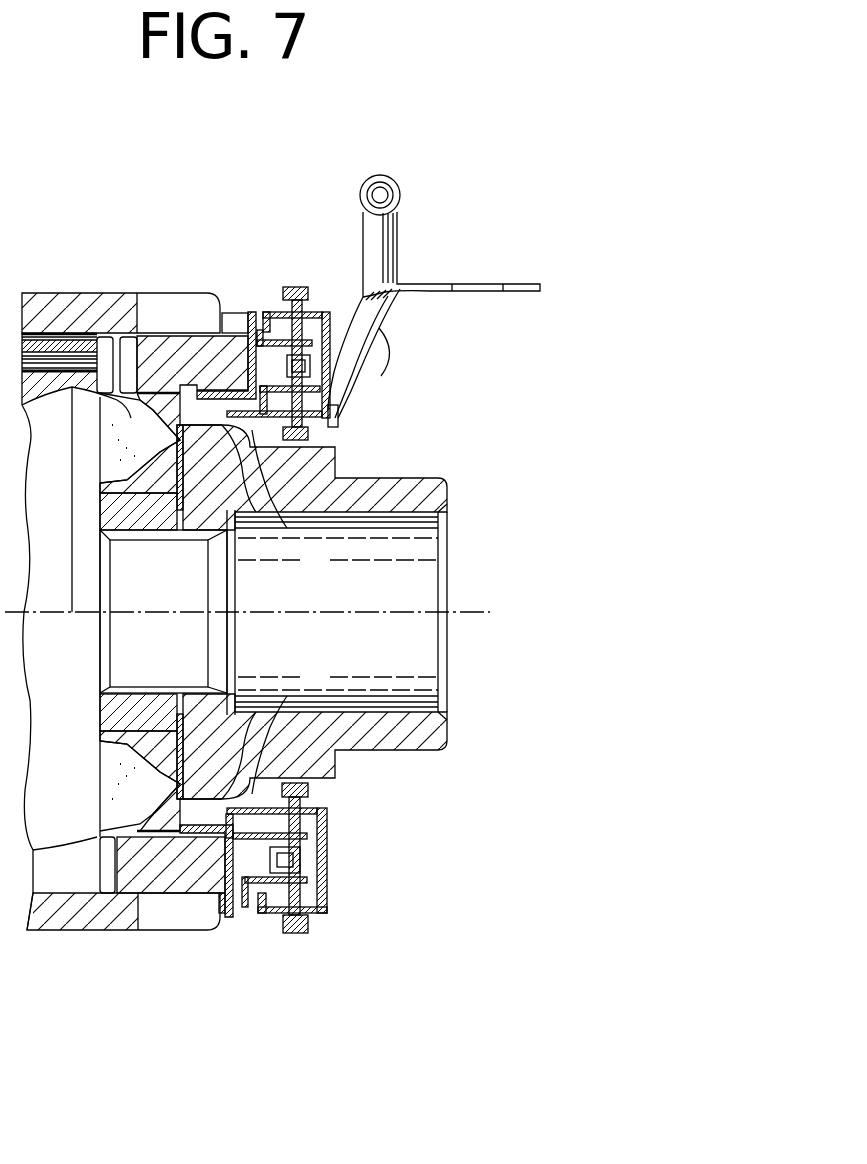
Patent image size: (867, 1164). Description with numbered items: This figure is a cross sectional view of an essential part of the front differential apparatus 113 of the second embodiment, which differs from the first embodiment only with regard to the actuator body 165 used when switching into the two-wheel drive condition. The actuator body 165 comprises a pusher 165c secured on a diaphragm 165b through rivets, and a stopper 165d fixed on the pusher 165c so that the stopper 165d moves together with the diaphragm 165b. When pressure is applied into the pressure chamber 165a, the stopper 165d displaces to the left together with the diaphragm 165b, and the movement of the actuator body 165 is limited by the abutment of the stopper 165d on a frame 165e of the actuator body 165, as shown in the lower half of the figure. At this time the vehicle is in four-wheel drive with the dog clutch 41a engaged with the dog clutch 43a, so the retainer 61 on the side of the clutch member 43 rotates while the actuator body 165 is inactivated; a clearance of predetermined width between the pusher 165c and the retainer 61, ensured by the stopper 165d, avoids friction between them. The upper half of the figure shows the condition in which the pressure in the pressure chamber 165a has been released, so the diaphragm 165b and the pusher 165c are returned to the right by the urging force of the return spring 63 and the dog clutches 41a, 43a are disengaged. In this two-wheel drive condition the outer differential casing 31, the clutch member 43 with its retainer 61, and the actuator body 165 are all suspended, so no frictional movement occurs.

The outer differential casing 31 is at (46, 291).
The dog clutch 41a is at (105, 338).
The dog clutch 43a is at (136, 336).
The clutch member 43 is at (143, 895).
The retainer 61 is at (251, 312).
The return spring 63 is at (230, 312).
The front differential apparatus 113 is at (372, 564).
The actuator body 165 is at (333, 268).
The pressure chamber 165a is at (318, 398).
The diaphragm 165b is at (338, 418).
The pusher 165c is at (238, 538).
The stopper 165d is at (282, 912).
The frame 165e is at (258, 900).